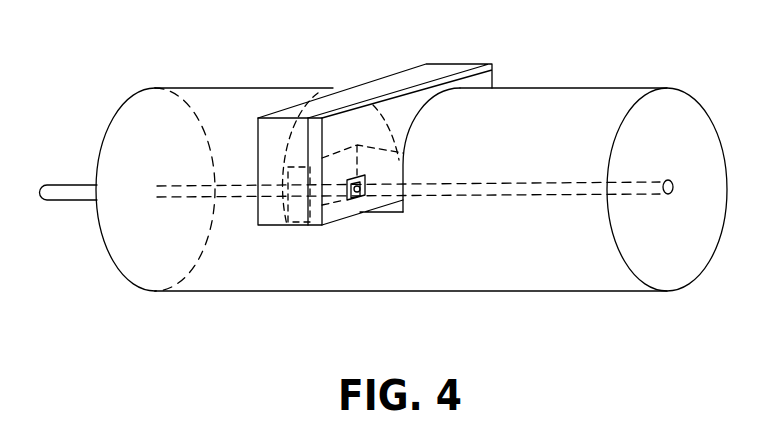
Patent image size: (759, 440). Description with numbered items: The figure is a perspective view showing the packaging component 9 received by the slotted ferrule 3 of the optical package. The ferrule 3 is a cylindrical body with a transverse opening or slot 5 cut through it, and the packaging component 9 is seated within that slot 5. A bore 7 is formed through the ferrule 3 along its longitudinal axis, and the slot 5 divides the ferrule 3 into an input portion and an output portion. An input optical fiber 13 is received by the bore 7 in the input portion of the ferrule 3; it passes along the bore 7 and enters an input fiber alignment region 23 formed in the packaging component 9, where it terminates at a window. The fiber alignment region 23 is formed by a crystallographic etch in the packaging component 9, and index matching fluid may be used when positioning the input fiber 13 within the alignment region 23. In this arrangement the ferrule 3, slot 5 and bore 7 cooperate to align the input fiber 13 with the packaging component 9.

The ferrule 3 is at (307, 280).
The slot 5 is at (390, 208).
The bore 7 is at (193, 186).
The packaging component 9 is at (412, 77).
The input optical fiber 13 is at (66, 185).
The input fiber alignment region 23 is at (403, 153).